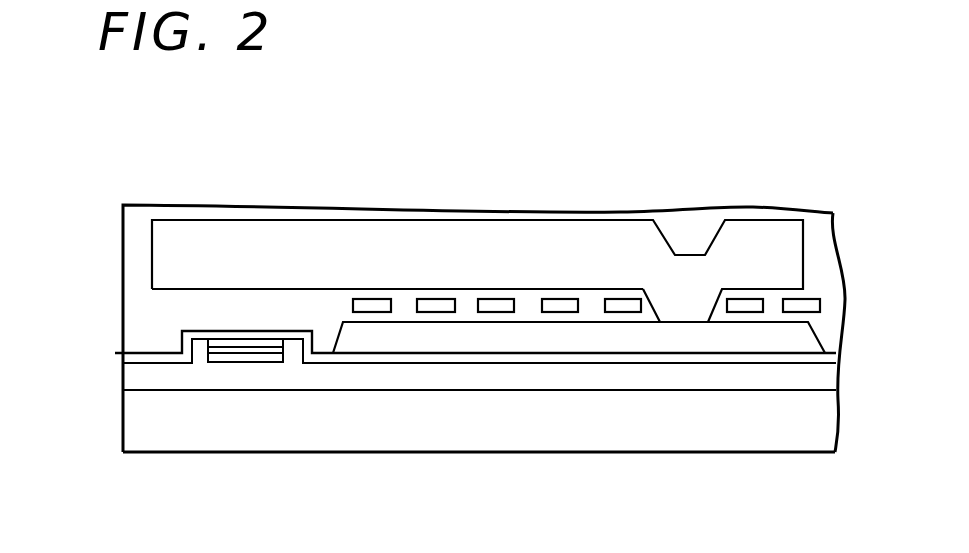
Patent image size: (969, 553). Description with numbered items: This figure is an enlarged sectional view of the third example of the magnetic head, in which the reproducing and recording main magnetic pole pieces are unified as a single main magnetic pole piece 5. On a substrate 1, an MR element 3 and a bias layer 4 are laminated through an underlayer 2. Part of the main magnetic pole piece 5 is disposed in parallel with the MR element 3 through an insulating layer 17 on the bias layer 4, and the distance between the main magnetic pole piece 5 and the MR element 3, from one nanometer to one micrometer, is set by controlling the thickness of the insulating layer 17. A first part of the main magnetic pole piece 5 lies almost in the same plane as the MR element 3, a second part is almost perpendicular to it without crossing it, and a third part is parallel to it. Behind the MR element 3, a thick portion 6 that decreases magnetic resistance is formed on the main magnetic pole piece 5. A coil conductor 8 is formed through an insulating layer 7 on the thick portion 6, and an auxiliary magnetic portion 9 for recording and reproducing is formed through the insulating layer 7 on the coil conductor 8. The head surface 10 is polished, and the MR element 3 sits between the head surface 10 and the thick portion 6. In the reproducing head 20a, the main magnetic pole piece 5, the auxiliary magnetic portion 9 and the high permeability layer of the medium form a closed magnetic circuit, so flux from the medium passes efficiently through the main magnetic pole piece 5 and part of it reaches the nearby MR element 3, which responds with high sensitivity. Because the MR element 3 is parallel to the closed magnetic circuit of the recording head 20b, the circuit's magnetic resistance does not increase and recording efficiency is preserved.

The substrate 1 is at (158, 435).
The underlayer 2 is at (595, 382).
The MR element 3 is at (252, 364).
The bias layer 4 is at (263, 348).
The main magnetic pole piece 5 is at (422, 363).
The thick portion 6 is at (708, 340).
The insulating layer 7 is at (330, 305).
The coil conductor 8 is at (498, 303).
The auxiliary magnetic portion 9 is at (645, 235).
The head surface 10 is at (116, 354).
The insulating layer 17 is at (218, 342).
The reproducing head 20a is at (150, 347).
The recording head 20b is at (849, 220).